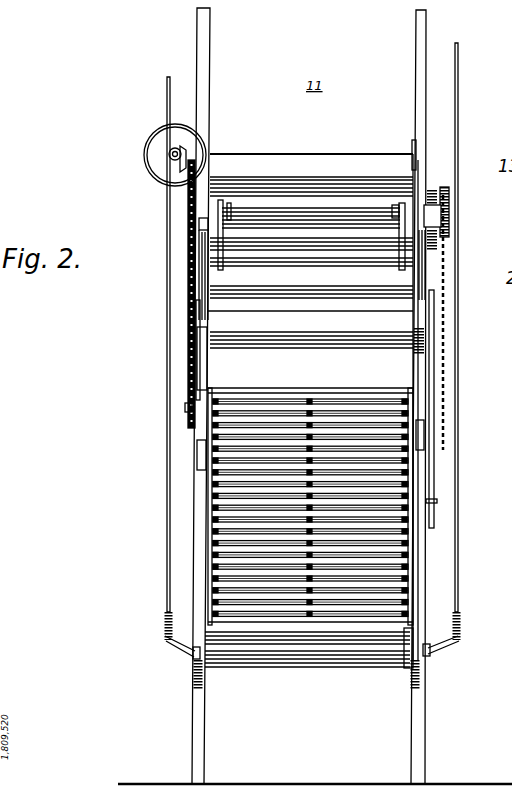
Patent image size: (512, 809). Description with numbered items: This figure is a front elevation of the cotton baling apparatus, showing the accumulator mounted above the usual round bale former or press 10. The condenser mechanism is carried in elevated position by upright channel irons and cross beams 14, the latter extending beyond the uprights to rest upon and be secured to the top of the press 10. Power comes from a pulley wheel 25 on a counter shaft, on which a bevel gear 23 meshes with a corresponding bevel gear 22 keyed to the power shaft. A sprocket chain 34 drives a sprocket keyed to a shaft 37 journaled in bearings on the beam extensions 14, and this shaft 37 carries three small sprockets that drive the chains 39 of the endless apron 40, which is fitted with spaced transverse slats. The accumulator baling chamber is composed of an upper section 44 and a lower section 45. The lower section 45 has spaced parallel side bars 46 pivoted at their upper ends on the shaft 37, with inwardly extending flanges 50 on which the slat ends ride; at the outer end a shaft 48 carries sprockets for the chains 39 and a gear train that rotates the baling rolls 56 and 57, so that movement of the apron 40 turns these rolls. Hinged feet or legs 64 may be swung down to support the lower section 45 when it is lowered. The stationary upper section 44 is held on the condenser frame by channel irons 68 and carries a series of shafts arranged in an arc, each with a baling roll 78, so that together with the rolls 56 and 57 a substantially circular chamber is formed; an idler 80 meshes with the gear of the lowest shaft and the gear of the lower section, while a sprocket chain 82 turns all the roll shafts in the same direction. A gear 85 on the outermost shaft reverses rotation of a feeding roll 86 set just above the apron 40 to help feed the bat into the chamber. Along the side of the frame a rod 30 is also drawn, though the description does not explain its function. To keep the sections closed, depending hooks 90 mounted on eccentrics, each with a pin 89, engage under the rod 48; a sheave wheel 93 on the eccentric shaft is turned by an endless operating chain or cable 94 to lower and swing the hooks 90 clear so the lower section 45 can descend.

The round bale former or press 10 is at (418, 582).
The cross beams 14 is at (202, 437).
The bevel gear 22 is at (191, 153).
The bevel gear 23 is at (172, 165).
The pulley wheel 25 is at (148, 140).
The rod 30 is at (437, 478).
The sprocket chain 34 is at (188, 342).
The shaft 37 is at (185, 406).
The chains 39 is at (210, 555).
The endless apron 40 is at (271, 506).
The upper section of the accumulator 44 is at (202, 292).
The lower section of the accumulator 45 is at (195, 631).
The side bars 46 is at (411, 505).
The shaft 48 is at (388, 652).
The inwardly extending flanges 50 is at (210, 518).
The baling roll 56 is at (333, 662).
The baling roll 57 is at (295, 625).
The feet or legs 64 is at (200, 730).
The channel irons 68 is at (201, 39).
The baling roll 78 is at (307, 160).
The idler 80 is at (430, 240).
The sprocket chain 82 is at (187, 222).
The gear 85 is at (421, 343).
The feeding roll 86 is at (300, 322).
The pin 89 is at (337, 212).
The depending hook 90 is at (220, 255).
The sheave wheel 93 is at (450, 202).
The endless operating chain or cable 94 is at (445, 375).